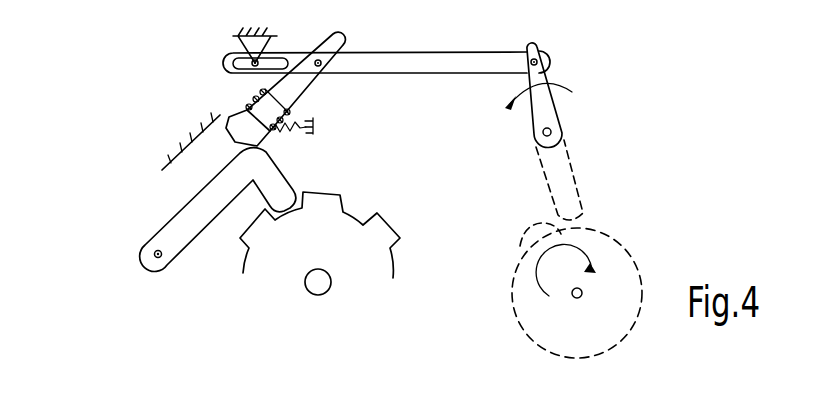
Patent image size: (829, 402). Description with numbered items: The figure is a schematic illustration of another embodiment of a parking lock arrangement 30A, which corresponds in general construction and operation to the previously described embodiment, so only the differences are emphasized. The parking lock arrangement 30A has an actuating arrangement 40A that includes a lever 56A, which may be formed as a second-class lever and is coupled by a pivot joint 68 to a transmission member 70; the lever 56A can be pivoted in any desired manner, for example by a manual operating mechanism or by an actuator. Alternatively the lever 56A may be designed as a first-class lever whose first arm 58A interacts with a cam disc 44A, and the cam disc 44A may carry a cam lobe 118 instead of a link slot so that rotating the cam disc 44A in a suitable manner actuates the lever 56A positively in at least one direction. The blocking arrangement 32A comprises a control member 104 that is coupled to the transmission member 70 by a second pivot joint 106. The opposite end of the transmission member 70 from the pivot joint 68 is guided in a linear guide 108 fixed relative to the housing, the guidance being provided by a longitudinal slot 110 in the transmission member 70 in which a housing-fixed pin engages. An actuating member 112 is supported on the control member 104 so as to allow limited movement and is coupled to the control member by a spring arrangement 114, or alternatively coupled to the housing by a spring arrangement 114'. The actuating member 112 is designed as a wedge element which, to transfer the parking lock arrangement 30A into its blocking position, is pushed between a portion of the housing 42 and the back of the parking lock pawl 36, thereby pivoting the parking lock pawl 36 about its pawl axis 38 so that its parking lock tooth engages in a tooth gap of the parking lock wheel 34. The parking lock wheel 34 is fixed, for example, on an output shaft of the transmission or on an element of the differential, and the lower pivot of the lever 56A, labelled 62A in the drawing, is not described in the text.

The parking lock arrangement 30A is at (612, 106).
The blocking arrangement 32A is at (188, 61).
The parking lock wheel 34 is at (273, 252).
The parking lock pawl 36 is at (182, 223).
The pawl axis 38 is at (165, 262).
The actuating arrangement 40A is at (632, 163).
The housing 42 is at (182, 137).
The cam disc 44A is at (642, 270).
The lever 56A is at (537, 77).
The first arm 58A is at (563, 195).
The follower roller pivot 62A is at (541, 133).
The pivot joint 68 is at (546, 59).
The transmission member 70 is at (426, 60).
The control member 104 is at (297, 82).
The second pivot joint 106 is at (315, 61).
The linear guide 108 is at (214, 78).
The longitudinal slot 110 is at (232, 60).
The actuating member 112 is at (255, 137).
The spring arrangement 114 is at (339, 110).
The spring arrangement 114' is at (348, 139).
The cam lobe 118 is at (522, 238).